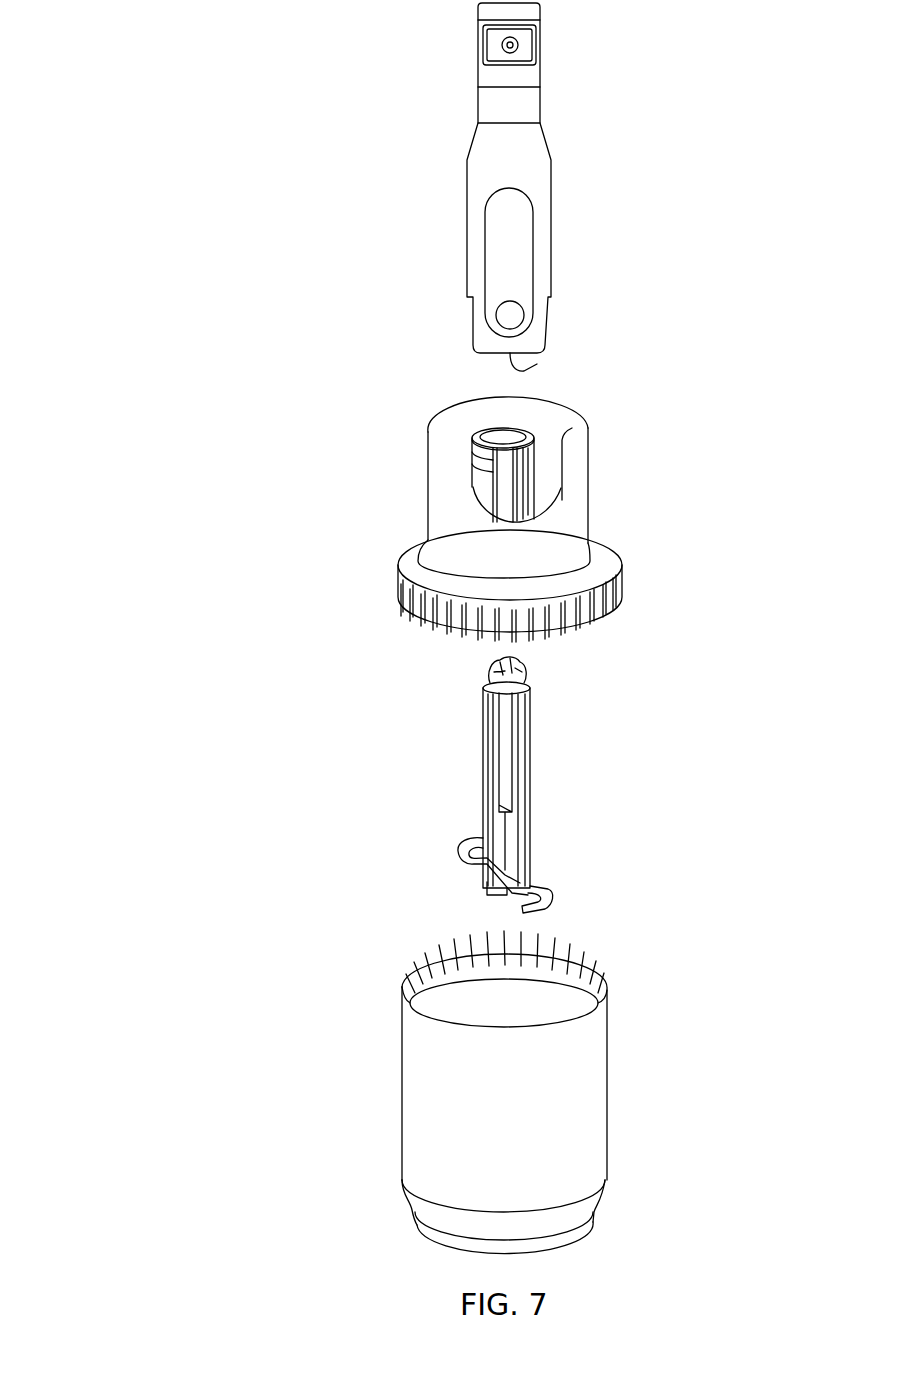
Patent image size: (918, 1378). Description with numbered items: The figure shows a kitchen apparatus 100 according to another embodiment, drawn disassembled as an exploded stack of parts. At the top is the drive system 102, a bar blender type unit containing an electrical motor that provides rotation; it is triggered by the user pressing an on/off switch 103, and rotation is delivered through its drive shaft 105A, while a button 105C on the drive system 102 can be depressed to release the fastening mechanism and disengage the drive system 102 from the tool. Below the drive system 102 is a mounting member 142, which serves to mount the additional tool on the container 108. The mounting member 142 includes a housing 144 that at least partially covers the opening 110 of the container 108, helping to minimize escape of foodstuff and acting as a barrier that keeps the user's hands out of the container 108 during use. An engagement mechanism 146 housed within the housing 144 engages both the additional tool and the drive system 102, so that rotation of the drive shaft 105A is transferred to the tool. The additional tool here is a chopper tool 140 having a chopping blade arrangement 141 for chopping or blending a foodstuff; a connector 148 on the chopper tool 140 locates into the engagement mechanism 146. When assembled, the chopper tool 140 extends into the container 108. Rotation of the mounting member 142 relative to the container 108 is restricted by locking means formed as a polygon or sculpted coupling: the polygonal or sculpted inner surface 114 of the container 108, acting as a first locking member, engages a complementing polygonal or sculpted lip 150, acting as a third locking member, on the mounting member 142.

The kitchen apparatus 100 is at (173, 85).
The drive system 102 is at (520, 167).
The on/off switch 103 is at (515, 43).
The drive shaft 105A is at (518, 371).
The button 105C is at (510, 313).
The container 108 is at (577, 1127).
The opening 110 is at (503, 997).
The first locking member 114 is at (436, 975).
The chopper tool 140 is at (520, 785).
The chopping blade arrangement 141 is at (466, 858).
The mounting member 142 is at (572, 518).
The housing 144 is at (427, 562).
The engagement mechanism 146 is at (494, 440).
The connector 148 is at (520, 673).
The third locking member 150 is at (428, 613).